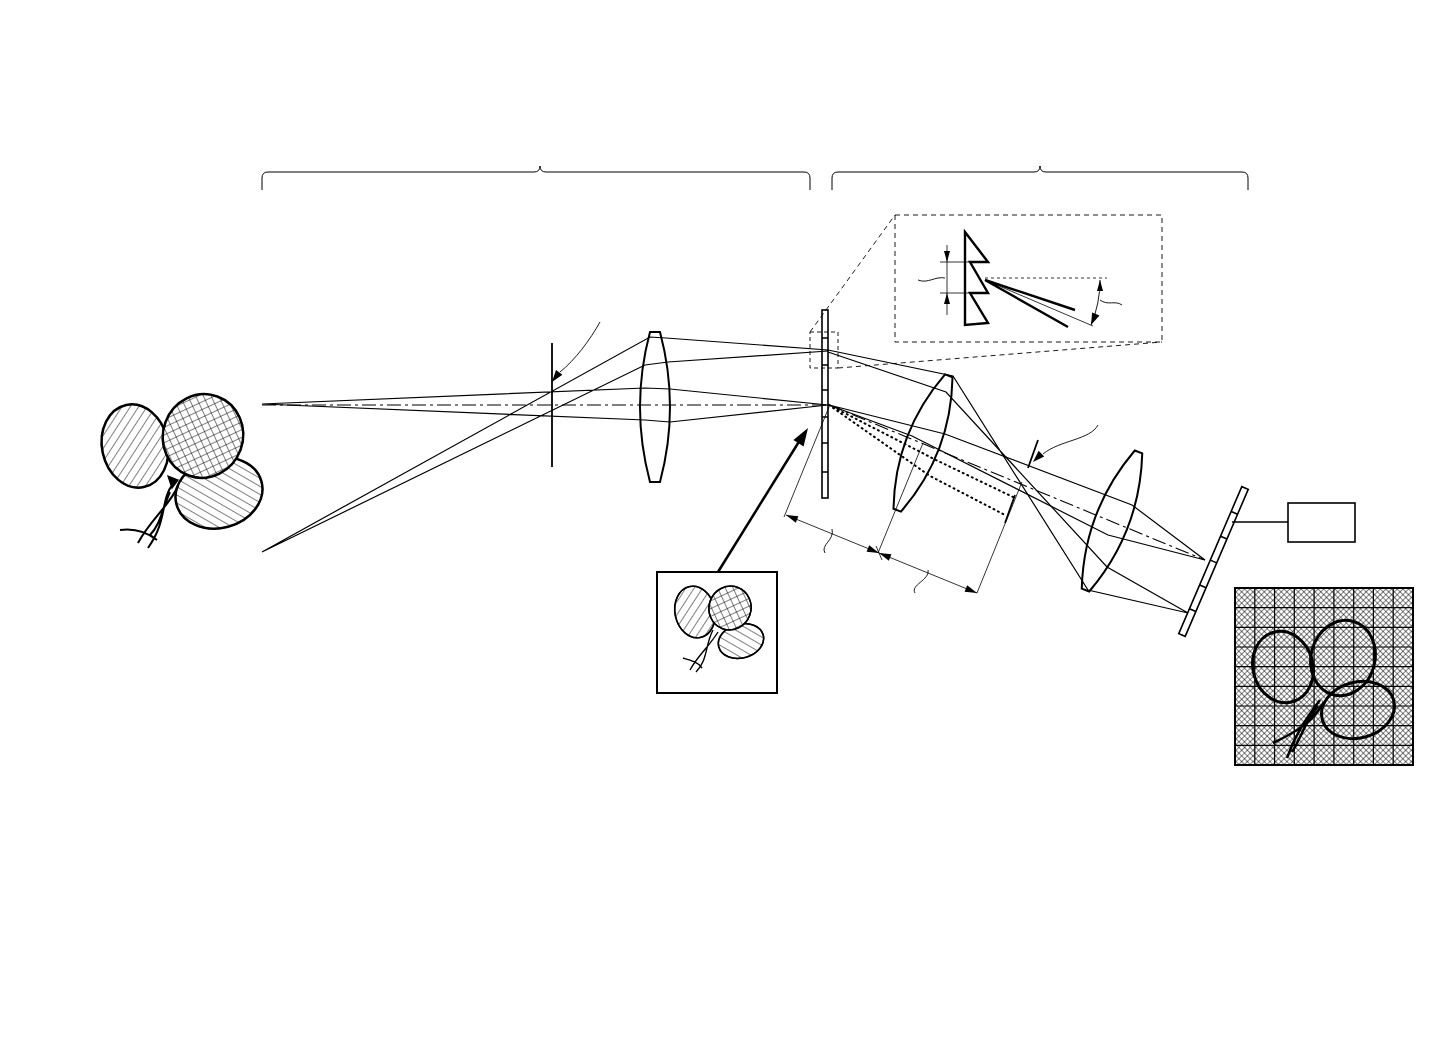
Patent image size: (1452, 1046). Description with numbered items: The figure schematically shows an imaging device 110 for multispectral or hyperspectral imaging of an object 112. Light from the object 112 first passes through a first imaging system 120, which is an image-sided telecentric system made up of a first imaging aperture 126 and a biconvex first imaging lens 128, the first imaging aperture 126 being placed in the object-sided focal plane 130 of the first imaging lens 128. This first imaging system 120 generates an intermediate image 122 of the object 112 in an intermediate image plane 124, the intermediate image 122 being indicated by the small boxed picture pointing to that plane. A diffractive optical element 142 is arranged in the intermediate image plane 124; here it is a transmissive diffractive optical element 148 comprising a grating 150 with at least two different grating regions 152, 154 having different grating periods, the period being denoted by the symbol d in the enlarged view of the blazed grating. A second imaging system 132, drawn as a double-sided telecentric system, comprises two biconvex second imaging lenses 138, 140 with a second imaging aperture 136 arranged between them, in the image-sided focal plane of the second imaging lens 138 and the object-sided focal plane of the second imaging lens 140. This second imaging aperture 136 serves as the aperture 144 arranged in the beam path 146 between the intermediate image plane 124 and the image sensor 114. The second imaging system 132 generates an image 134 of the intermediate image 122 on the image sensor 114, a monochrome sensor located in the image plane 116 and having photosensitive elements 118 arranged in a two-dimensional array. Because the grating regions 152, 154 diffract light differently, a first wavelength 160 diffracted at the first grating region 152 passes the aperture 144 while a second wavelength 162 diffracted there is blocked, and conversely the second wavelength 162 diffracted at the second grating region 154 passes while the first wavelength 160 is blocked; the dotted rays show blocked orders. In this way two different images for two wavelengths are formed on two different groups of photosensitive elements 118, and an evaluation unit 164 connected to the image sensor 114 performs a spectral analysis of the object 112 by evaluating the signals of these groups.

The imaging device 110 is at (1326, 170).
The object 112 is at (207, 395).
The image sensor 114 is at (1283, 625).
The image plane 116 is at (1248, 486).
The photosensitive elements 118 is at (1334, 767).
The first imaging system 120 is at (540, 166).
The intermediate image 122 is at (718, 695).
The intermediate image plane 124 is at (951, 355).
The first imaging aperture 126 is at (506, 379).
The first imaging lens 128 is at (655, 486).
The object-sided focal plane 130 is at (550, 363).
The second imaging system 132 is at (1040, 166).
The image 134 is at (1223, 677).
The second imaging aperture 136 is at (1034, 504).
The second imaging lens 138 is at (897, 492).
The second imaging lens 140 is at (1085, 595).
The diffractive optical element 142 is at (1028, 278).
The aperture 144 is at (1034, 504).
The beam path 146 is at (1026, 548).
The transmissive diffractive optical element 148 is at (824, 310).
The grating 150 is at (988, 243).
The first grating region 152 is at (795, 331).
The second grating region 154 is at (790, 424).
The first wavelength 160 is at (956, 503).
The second wavelength 162 is at (1165, 535).
The evaluation unit 164 is at (1341, 535).